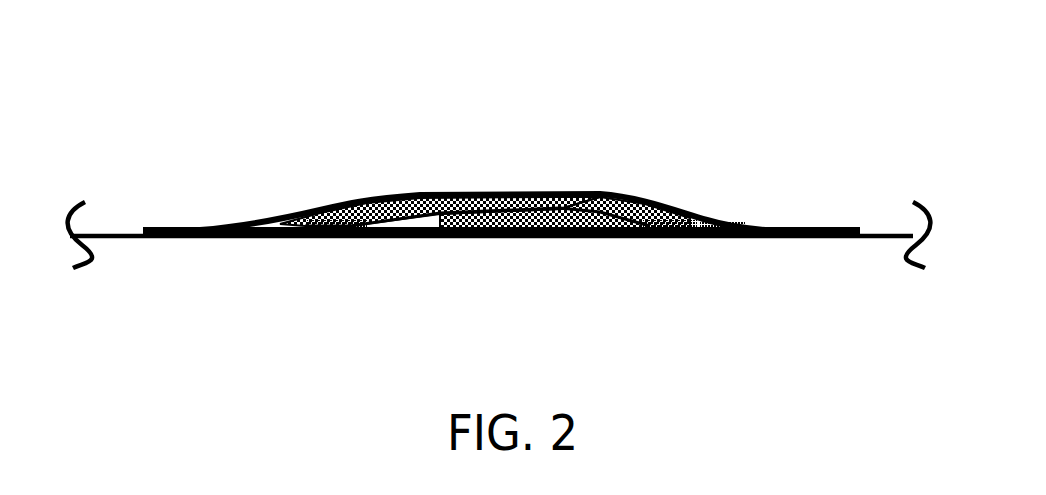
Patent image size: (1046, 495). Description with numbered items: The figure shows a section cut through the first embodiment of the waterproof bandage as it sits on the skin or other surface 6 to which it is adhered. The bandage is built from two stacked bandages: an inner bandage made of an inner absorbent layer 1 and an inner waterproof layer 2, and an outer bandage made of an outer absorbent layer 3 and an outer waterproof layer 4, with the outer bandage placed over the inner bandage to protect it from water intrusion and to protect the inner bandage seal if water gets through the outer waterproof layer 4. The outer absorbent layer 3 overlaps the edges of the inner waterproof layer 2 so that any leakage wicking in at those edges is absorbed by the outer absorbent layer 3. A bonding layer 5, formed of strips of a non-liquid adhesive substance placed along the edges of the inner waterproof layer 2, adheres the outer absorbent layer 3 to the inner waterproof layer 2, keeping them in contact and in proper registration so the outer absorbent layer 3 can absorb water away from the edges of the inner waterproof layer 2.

The inner absorbent layer 1 is at (573, 225).
The inner waterproof layer 2 is at (497, 217).
The outer absorbent layer 3 is at (368, 197).
The outer waterproof layer 4 is at (420, 196).
The bonding layer 5 is at (654, 238).
The skin or other surface 6 is at (113, 240).